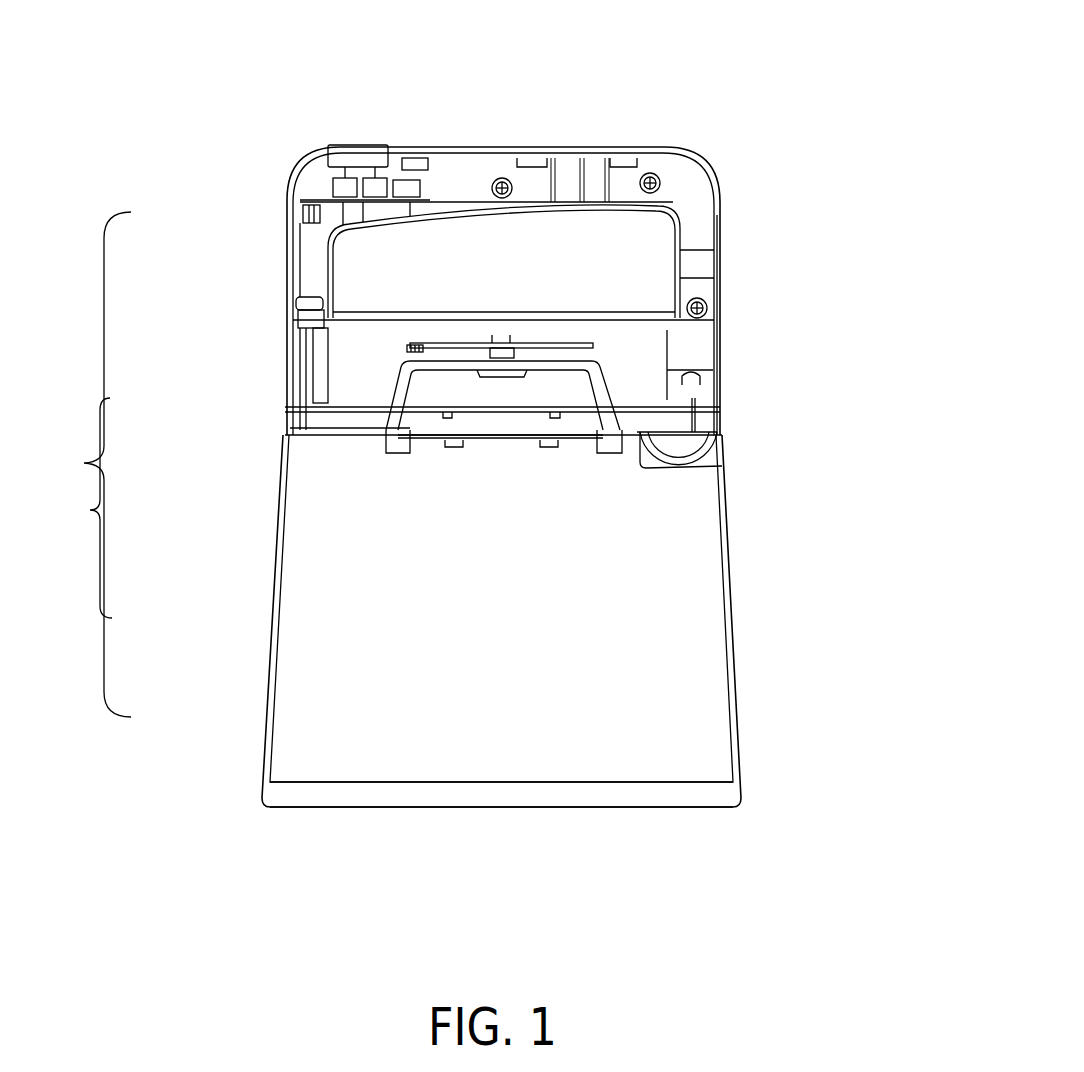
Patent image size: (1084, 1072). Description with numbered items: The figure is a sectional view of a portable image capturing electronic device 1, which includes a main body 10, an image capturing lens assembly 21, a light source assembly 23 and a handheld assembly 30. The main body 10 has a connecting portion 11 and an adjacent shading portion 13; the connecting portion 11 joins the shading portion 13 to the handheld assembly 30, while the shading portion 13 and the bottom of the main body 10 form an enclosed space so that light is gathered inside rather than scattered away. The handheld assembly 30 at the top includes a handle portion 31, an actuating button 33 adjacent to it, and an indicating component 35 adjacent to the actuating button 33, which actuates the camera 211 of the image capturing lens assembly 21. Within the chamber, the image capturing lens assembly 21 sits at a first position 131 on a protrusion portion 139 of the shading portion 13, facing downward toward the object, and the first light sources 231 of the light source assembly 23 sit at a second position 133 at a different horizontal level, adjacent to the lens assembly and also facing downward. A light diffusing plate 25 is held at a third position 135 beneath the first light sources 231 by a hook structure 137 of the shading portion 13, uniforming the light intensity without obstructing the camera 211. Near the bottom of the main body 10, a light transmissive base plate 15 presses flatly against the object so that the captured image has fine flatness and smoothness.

The portable image capturing electronic device 1 is at (62, 83).
The main body 10 is at (86, 464).
The connecting portion 11 is at (285, 376).
The shading portion 13 is at (272, 586).
The light transmissive base plate 15 is at (722, 793).
The image capturing lens assembly 21 is at (557, 345).
The camera 211 is at (503, 352).
The light source assembly 23 is at (540, 410).
The first light sources 231 is at (450, 413).
The light diffusing plate 25 is at (433, 448).
The handheld assembly 30 is at (475, 75).
The handle portion 31 is at (528, 148).
The actuating button 33 is at (363, 148).
The indicating component 35 is at (320, 148).
The first position 131 is at (700, 343).
The second position 133 is at (665, 410).
The third position 135 is at (614, 438).
The hook structure 137 is at (546, 447).
The protrusion portion 139 is at (394, 388).